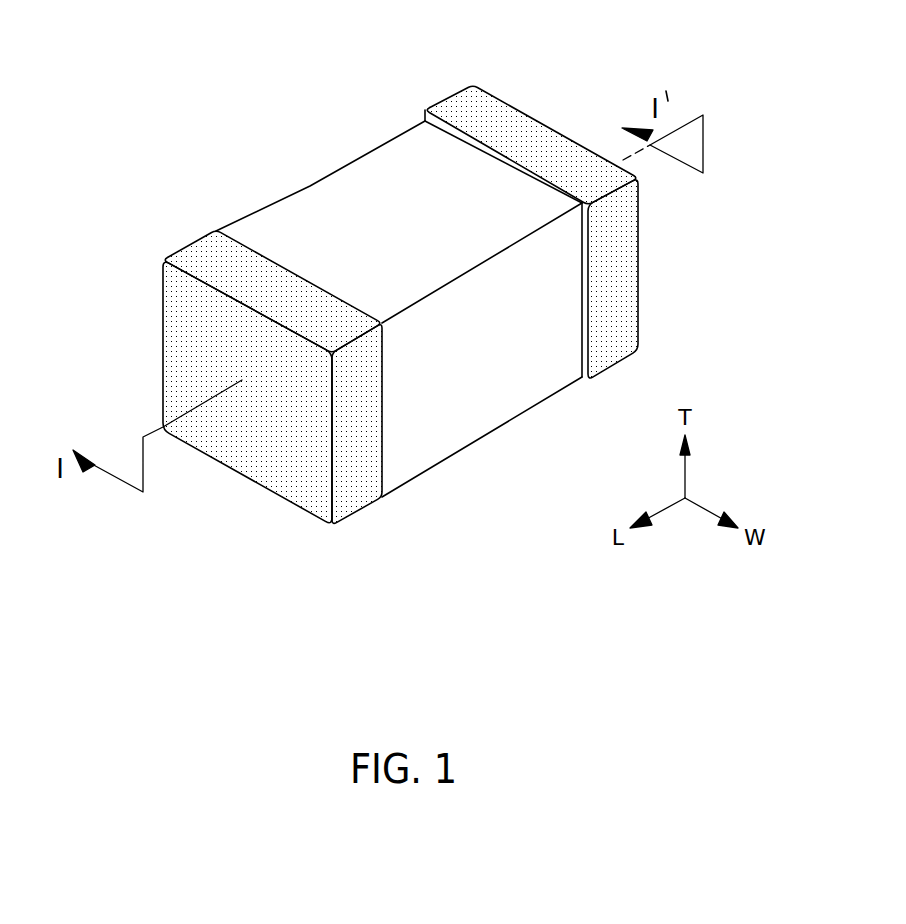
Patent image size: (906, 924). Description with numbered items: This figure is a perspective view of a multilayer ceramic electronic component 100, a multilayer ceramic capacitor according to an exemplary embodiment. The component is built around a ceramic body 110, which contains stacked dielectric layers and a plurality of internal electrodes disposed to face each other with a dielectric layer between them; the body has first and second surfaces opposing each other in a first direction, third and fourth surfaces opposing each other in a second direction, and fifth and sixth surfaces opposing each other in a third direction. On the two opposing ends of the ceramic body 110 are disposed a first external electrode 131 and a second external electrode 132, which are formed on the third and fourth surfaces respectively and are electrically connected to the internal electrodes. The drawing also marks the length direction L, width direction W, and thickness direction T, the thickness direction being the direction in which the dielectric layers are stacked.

The multilayer ceramic electronic component 100 is at (143, 46).
The ceramic body 110 is at (338, 187).
The first external electrode 131 is at (203, 250).
The second external electrode 132 is at (523, 123).